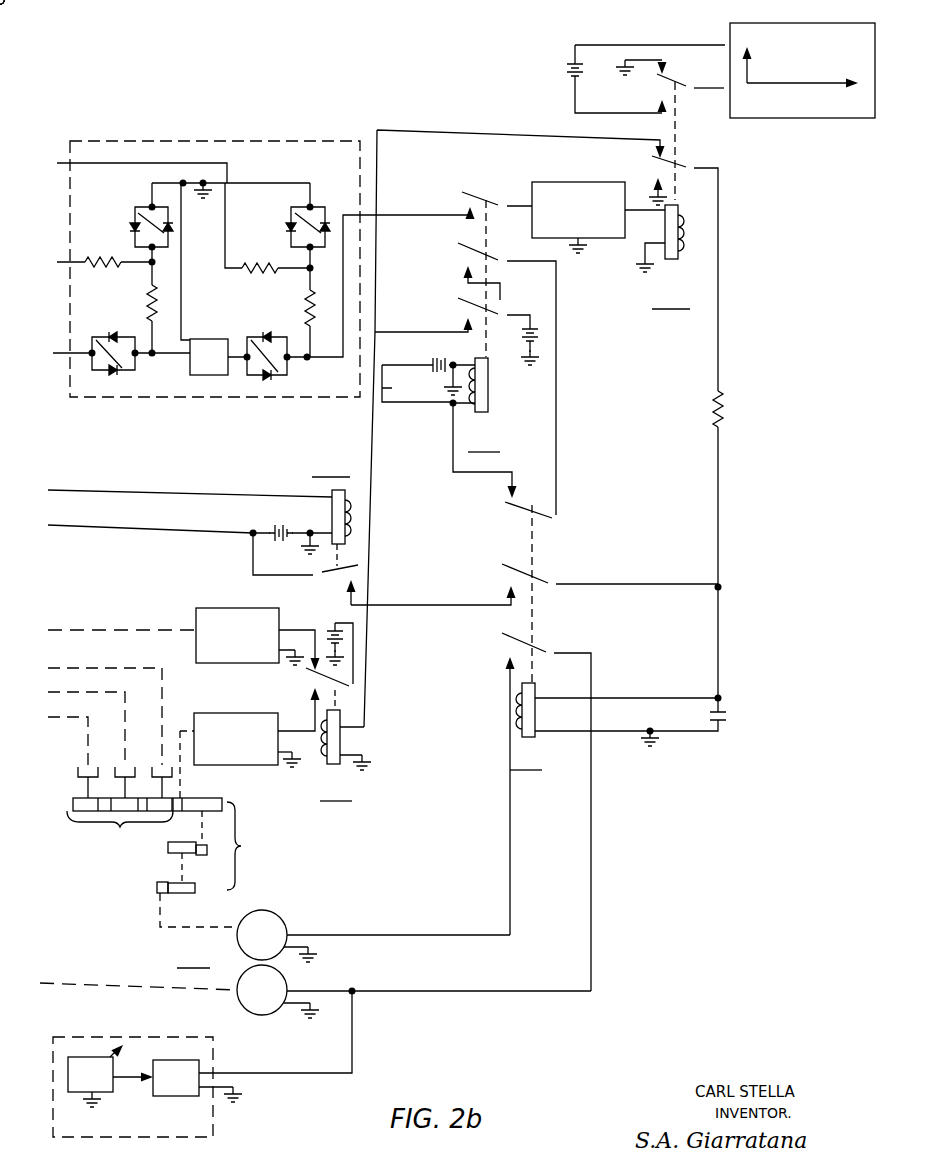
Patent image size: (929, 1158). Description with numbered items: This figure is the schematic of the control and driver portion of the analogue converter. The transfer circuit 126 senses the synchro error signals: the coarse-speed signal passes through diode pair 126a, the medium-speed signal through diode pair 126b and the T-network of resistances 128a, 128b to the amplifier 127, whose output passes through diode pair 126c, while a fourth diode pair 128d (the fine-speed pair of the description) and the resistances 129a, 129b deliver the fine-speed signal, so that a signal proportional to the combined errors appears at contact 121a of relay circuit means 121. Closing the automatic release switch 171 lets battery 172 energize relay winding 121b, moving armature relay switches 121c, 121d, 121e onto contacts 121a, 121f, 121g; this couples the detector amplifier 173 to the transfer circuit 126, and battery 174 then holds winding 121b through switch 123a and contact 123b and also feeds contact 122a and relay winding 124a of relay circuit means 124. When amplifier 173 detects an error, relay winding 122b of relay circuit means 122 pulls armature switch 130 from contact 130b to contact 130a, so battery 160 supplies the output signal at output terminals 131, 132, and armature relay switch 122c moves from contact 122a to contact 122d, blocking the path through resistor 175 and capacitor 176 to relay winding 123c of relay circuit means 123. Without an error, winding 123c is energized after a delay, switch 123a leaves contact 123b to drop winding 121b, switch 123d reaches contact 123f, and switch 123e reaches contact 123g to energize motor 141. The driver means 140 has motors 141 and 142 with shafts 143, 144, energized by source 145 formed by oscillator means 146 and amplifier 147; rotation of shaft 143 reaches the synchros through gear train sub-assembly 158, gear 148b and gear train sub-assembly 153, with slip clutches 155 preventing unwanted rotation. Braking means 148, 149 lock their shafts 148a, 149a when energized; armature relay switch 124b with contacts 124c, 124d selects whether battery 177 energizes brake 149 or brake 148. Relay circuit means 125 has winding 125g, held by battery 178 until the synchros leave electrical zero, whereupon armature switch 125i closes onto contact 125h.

The transfer circuit 126 is at (206, 142).
The diode pair 126a is at (110, 338).
The diode pair 126b is at (137, 213).
The diode pair 126c is at (258, 338).
The amplifier 127 is at (216, 338).
The resistor 128a is at (148, 300).
The resistance 128b is at (104, 245).
The diode bridge switch 128d is at (292, 216).
The resistance 129a is at (302, 300).
The resistance 129b is at (267, 228).
The relay circuit means 121 is at (484, 443).
The contact 121a is at (468, 210).
The relay winding 121b is at (490, 399).
The armature relay switch 121c is at (480, 191).
The armature relay switch 121d is at (490, 258).
The armature relay switch 121e is at (500, 312).
The contact 121f is at (466, 268).
The contact 121g is at (466, 321).
The automatic release switch 171 is at (404, 374).
The battery 172 is at (439, 363).
The detector amplifier 173 is at (570, 183).
The battery 174 is at (545, 334).
The resistor 175 is at (712, 406).
The capacitor 176 is at (708, 715).
The battery 177 is at (356, 640).
The battery 178 is at (275, 527).
The battery 160 is at (562, 81).
The armature switch 130 is at (682, 93).
The contact 130a is at (658, 105).
The contact 130b is at (667, 66).
The output terminal 131 is at (727, 44).
The output terminal 132 is at (726, 85).
The relay circuit means 122 is at (671, 300).
The contact 122a is at (672, 153).
The relay winding 122b is at (676, 250).
The armature relay switch 122c is at (682, 172).
The contact 122d is at (656, 183).
The relay circuit means 123 is at (526, 761).
The armature relay switch 123a is at (518, 511).
The contact 123b is at (508, 492).
The relay winding 123c is at (516, 704).
The armature relay switch 123d is at (540, 580).
The armature relay switch 123e is at (540, 650).
The contact 123f is at (506, 591).
The contact 123g is at (505, 661).
The relay circuit means 124 is at (336, 792).
The relay winding 124a is at (346, 739).
The armature relay switch 124b is at (358, 687).
The contact 124c is at (310, 671).
The contact 124d is at (308, 695).
The relay circuit means 125 is at (331, 468).
The relay winding 125g is at (346, 501).
The contact 125h is at (345, 589).
The relay armature switch 125i is at (360, 569).
The braking means 148 is at (225, 766).
The controlled shaft 148a is at (180, 730).
The gear 148b is at (180, 807).
The braking means 149 is at (240, 607).
The controlled shaft 149a is at (147, 628).
The slip clutches 155 is at (151, 764).
The gear train sub-assembly 153 is at (144, 823).
The gear train sub-assembly 158 is at (216, 847).
The motor shaft 143 is at (184, 928).
The driver means 140 is at (193, 959).
The motor 141 is at (278, 918).
The motor 142 is at (260, 1013).
The motor shaft 144 is at (135, 985).
The source of electrical energy 145 is at (85, 1036).
The adjustable oscillator means 146 is at (103, 1093).
The amplifier 147 is at (170, 1096).